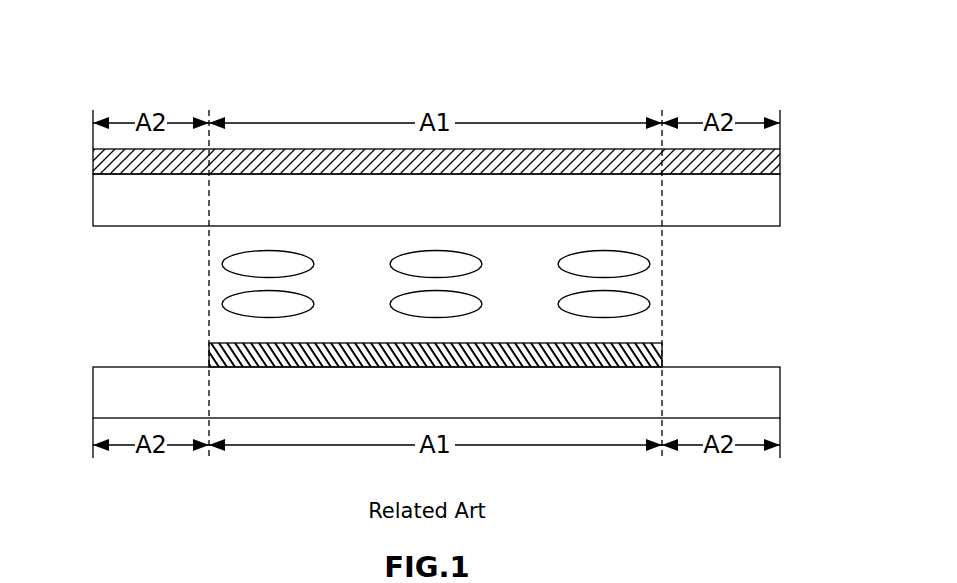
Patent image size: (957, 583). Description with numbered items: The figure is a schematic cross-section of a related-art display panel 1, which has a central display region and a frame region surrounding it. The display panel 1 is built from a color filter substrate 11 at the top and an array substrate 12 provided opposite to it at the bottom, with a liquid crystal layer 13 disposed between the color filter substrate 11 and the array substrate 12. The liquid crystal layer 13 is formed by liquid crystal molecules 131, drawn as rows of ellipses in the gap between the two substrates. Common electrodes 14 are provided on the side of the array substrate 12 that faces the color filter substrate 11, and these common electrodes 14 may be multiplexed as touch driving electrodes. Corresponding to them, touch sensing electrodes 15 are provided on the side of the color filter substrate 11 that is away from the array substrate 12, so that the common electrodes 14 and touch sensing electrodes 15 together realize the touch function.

The display panel 1 is at (428, 85).
The color filter substrate 11 is at (125, 200).
The array substrate 12 is at (127, 395).
The liquid crystal layer 13 is at (436, 284).
The liquid crystal molecules 131 is at (245, 264).
The common electrodes 14 is at (233, 353).
The touch sensing electrodes 15 is at (125, 163).